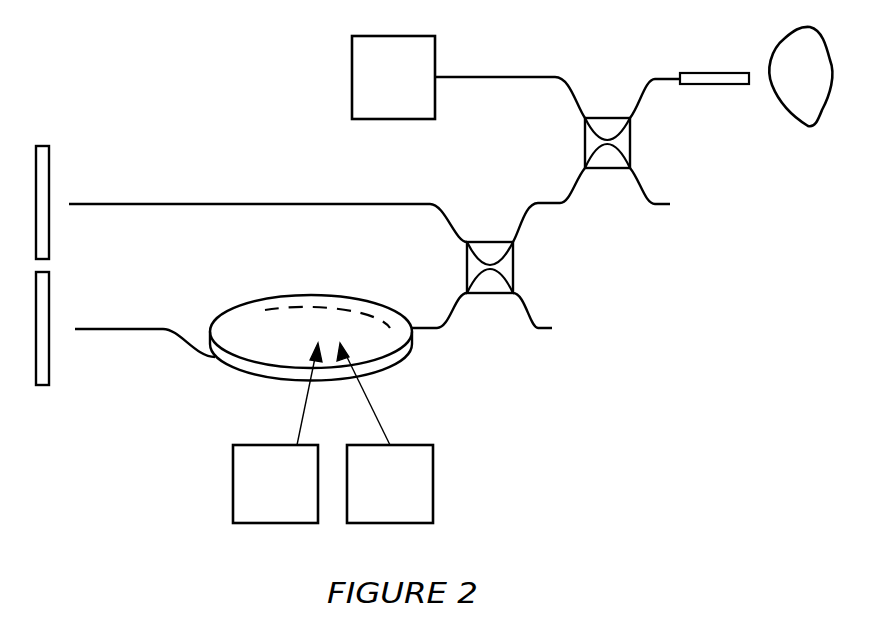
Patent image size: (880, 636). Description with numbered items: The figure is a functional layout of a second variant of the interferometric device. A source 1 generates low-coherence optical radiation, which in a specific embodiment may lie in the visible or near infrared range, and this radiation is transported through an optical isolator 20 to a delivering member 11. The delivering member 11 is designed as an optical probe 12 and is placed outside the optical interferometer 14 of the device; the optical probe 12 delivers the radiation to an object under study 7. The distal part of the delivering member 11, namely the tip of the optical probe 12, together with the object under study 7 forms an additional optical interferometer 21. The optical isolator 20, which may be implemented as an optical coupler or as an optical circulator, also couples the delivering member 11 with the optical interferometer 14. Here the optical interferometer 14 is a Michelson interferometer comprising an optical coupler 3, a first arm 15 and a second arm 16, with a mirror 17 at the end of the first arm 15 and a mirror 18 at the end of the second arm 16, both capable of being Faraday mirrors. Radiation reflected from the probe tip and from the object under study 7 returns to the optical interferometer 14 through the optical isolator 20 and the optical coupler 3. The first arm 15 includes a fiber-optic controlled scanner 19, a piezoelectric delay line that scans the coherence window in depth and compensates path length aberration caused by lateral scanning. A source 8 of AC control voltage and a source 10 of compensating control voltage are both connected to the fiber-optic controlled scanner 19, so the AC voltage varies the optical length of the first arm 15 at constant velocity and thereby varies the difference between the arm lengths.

The source 1 is at (393, 77).
The optical interferometer 14 is at (419, 90).
The optical isolator 20 is at (596, 156).
The delivering member 11 is at (720, 75).
The optical probe 12 is at (726, 100).
The additional optical interferometer 21 is at (726, 100).
The object under study 7 is at (800, 109).
The second arm 16 is at (268, 200).
The optical coupler 3 is at (482, 265).
The mirror 18 is at (60, 185).
The mirror 17 is at (59, 352).
The first arm 15 is at (145, 360).
The fiber-optic controlled scanner 19 is at (311, 321).
The source of AC control voltage 8 is at (277, 433).
The source of compensating control voltage 10 is at (385, 433).